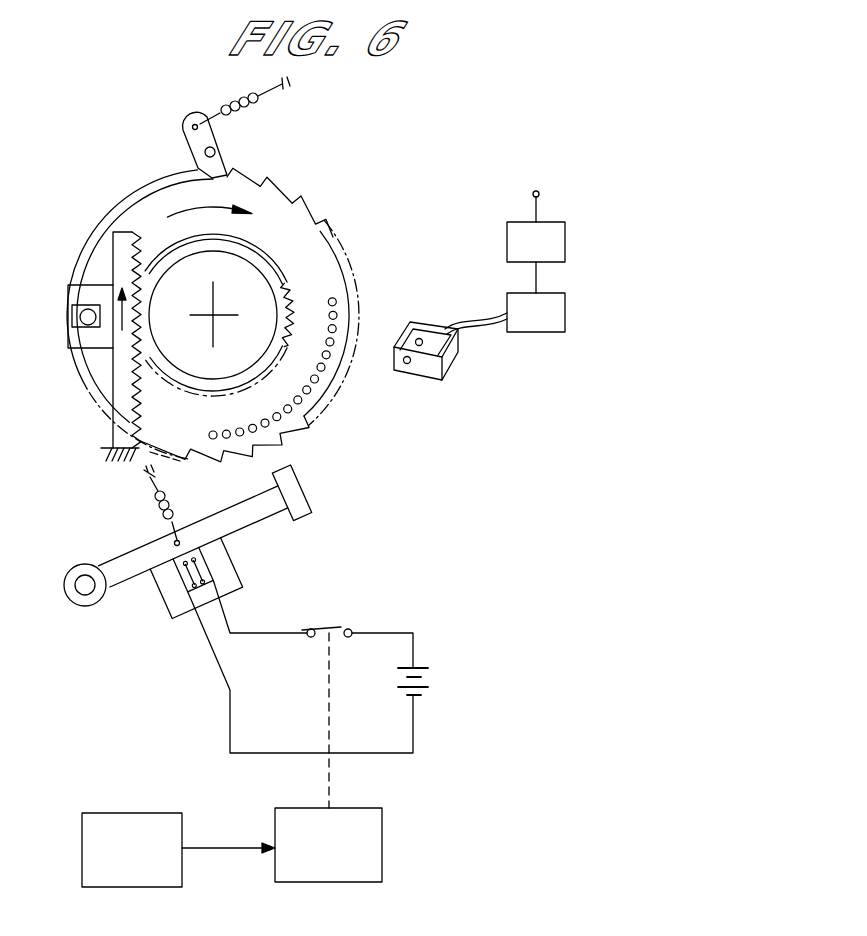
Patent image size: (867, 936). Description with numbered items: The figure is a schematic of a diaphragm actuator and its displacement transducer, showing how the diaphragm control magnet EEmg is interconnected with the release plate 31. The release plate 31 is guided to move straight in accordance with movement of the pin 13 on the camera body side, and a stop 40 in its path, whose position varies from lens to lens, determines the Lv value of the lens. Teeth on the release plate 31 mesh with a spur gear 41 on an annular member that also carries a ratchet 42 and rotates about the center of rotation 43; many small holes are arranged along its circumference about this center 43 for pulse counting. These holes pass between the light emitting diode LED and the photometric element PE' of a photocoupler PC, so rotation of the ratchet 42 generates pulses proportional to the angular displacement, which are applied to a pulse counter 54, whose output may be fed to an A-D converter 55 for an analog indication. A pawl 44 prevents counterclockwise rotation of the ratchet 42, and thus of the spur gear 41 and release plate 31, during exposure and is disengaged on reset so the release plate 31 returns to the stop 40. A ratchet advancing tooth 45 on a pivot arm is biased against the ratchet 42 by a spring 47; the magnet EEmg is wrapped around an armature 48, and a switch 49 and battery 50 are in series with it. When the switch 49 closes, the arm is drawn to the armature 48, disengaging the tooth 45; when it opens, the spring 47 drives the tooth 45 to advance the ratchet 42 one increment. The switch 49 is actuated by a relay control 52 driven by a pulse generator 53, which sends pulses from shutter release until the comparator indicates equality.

The pin 13 is at (80, 318).
The release plate 31 is at (90, 292).
The stop 40 is at (112, 445).
The spur gear 41 is at (250, 243).
The ratchet 42 is at (337, 235).
The center of rotation 43 is at (228, 299).
The pawl 44 is at (227, 148).
The ratchet advancing tooth 45 is at (302, 493).
The spring 47 is at (168, 498).
The armature 48 is at (172, 588).
The switch 49 is at (318, 629).
The battery 50 is at (430, 670).
The relay control 52 is at (383, 833).
The pulse generator 53 is at (157, 887).
The pulse counter 54 is at (542, 323).
The A-D converter 55 is at (560, 253).
The photocoupler PC is at (448, 352).
The photometric element PE' is at (420, 314).
The light emitting diode LED is at (405, 377).
The diaphragm control magnet EEmg is at (225, 617).